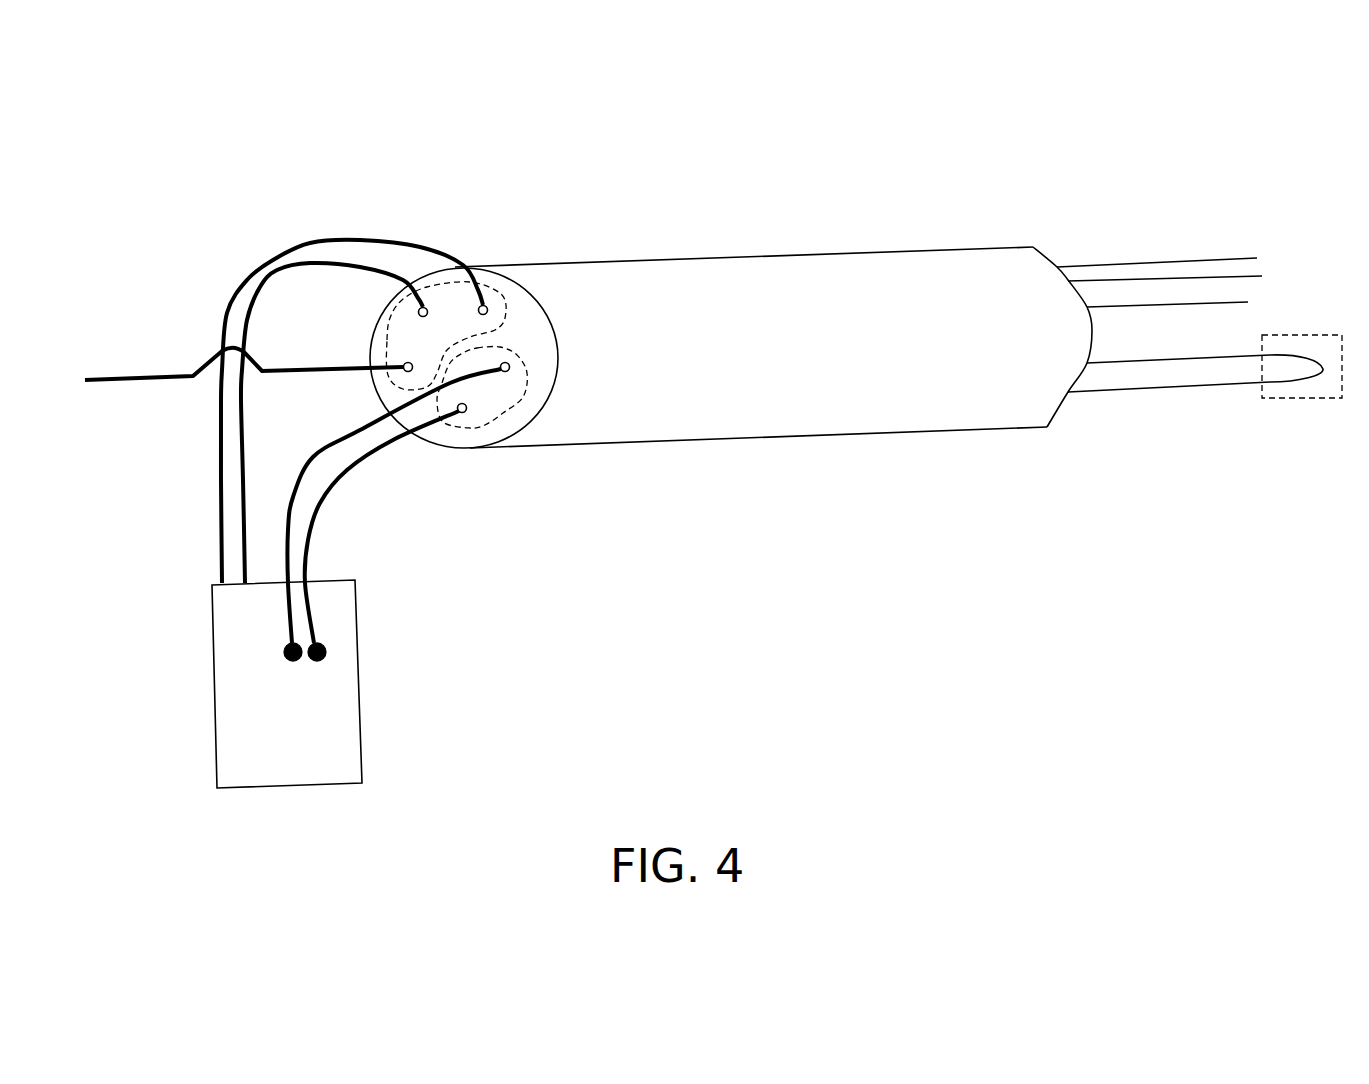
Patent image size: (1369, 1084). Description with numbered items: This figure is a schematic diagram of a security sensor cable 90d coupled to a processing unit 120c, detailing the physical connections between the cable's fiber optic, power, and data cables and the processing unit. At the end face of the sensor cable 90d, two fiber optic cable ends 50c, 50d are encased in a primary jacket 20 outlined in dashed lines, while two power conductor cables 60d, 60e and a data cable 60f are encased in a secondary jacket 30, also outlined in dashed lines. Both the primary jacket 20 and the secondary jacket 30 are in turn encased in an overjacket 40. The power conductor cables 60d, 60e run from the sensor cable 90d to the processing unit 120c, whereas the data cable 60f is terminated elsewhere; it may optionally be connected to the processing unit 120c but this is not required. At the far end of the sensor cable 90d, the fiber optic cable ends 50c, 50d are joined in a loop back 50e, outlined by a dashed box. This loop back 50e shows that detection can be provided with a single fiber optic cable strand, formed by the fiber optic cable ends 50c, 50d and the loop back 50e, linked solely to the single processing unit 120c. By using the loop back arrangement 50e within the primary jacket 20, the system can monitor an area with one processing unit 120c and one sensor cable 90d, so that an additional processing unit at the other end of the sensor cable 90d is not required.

The primary jacket 20 is at (505, 408).
The secondary jacket 30 is at (393, 319).
The overjacket 40 is at (555, 328).
The fiber optic cable end 50c is at (353, 430).
The fiber optic cable end 50d is at (345, 478).
The loop back 50e is at (1283, 398).
The power conductor cable 60d is at (322, 242).
The power conductor cable 60e is at (290, 283).
The data cable 60f is at (142, 376).
The sensor cable 90d is at (740, 258).
The processing unit 120c is at (342, 690).